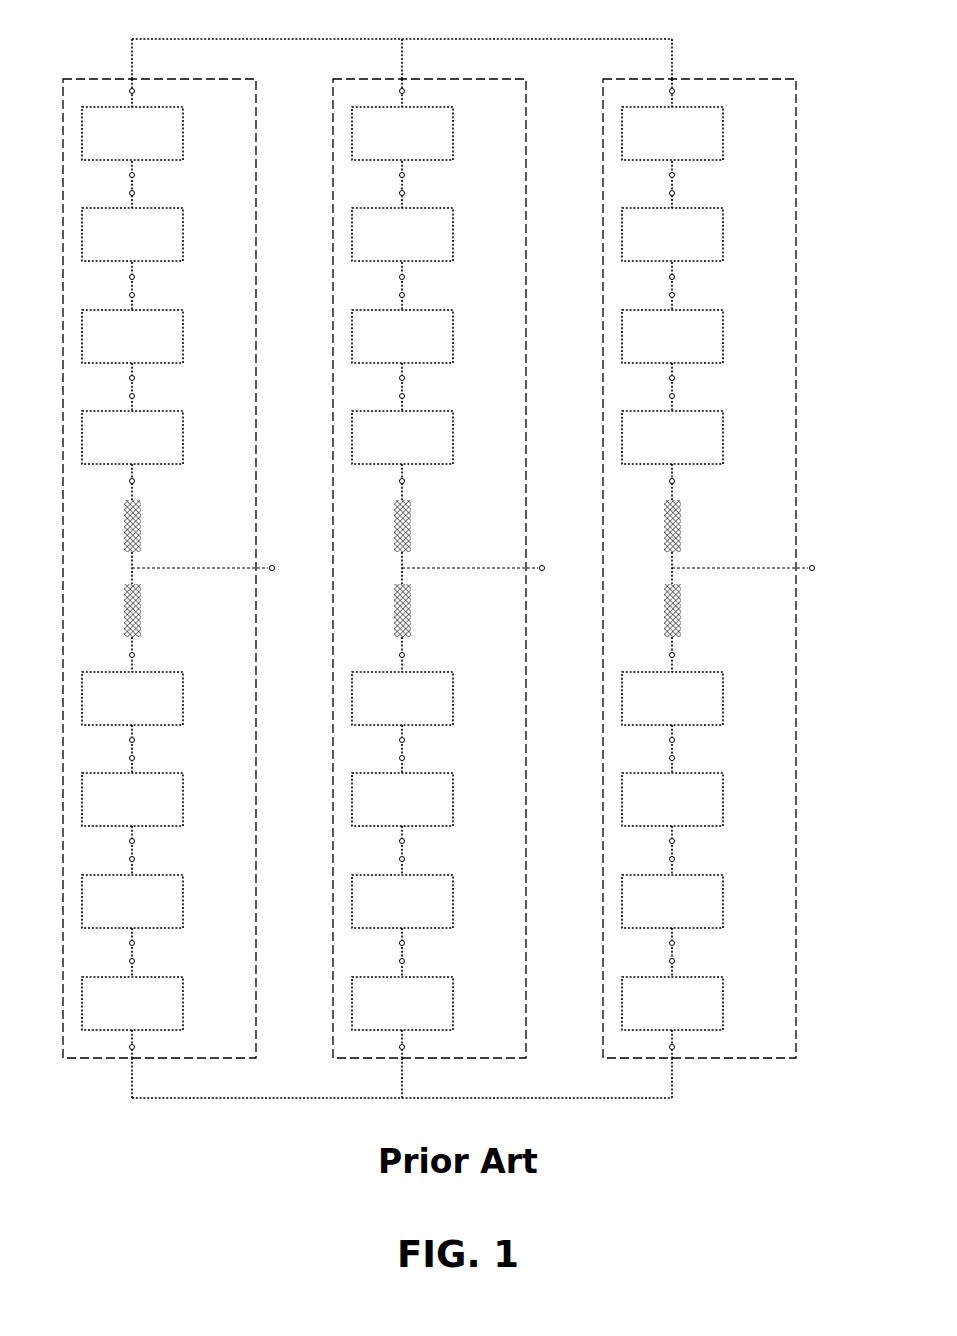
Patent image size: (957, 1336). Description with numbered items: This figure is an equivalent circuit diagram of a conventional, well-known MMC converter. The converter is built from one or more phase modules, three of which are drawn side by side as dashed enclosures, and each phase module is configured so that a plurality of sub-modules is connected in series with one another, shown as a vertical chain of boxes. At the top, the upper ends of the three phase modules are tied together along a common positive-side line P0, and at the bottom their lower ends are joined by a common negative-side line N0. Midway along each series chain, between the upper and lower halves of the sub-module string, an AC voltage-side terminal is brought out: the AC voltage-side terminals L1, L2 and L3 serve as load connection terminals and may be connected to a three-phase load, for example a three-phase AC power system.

The AC voltage-side terminal L1 is at (219, 570).
The AC voltage-side terminal L2 is at (489, 570).
The AC voltage-side terminal L3 is at (759, 570).
The positive bus line P0 is at (258, 39).
The negative bus line N0 is at (258, 1098).